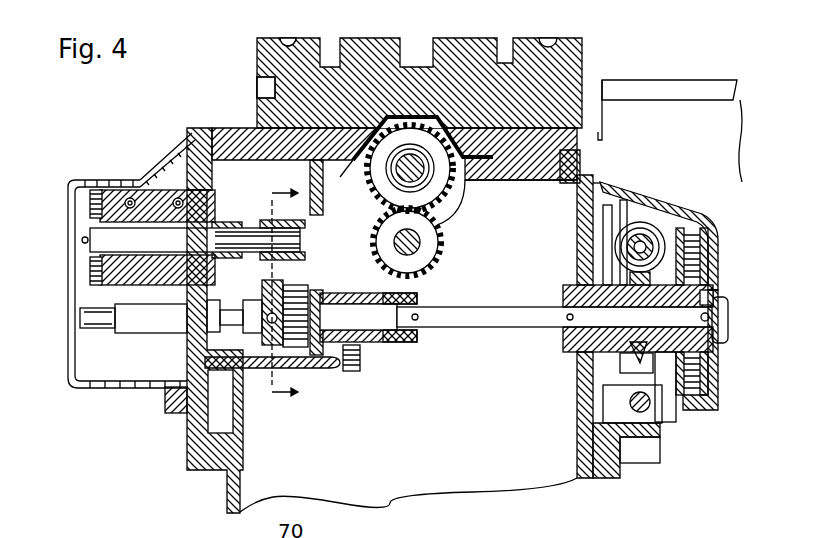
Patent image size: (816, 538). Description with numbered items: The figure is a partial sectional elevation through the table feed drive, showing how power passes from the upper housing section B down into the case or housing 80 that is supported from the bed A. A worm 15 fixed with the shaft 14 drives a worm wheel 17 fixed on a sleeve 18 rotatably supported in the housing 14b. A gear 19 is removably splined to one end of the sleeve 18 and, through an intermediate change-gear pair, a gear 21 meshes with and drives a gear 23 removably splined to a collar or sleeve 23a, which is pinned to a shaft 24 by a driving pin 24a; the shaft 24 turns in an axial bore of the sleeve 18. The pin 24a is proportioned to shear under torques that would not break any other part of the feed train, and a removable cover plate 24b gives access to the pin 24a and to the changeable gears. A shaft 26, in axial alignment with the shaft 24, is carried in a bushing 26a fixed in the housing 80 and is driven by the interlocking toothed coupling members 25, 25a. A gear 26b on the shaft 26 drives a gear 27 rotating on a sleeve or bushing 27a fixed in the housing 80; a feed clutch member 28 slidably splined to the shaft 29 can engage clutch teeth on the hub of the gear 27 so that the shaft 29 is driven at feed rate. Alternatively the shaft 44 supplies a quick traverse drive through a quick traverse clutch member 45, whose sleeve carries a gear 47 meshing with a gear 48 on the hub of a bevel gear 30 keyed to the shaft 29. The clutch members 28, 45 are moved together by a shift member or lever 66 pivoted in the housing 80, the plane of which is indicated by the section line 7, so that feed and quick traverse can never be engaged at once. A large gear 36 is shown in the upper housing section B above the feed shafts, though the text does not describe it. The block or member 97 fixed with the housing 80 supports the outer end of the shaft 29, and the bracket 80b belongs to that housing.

The upper housing section B is at (460, 41).
The bed A is at (227, 488).
The section line 7— 7 is at (277, 292).
The shaft 14 is at (632, 227).
The housing 14b is at (665, 205).
The worm 15 is at (653, 230).
The worm wheel 17 is at (643, 372).
The sleeve 18 is at (672, 367).
The gear 19 is at (687, 365).
The gear 21 is at (713, 392).
The gear 23 is at (713, 295).
The collar or sleeve 23a is at (722, 300).
The shaft 24 is at (722, 333).
The driving pin 24a is at (716, 322).
The removable cover plate 24b is at (712, 251).
The coupling member 25 is at (386, 341).
The coupling member 25a is at (405, 338).
The shaft 26 is at (363, 340).
The bushing 26a is at (368, 341).
The gear 26b is at (312, 360).
The gear 27 is at (300, 128).
The sleeve or bushing 27a is at (300, 226).
The feed clutch member 28 is at (247, 220).
The shaft 29 is at (223, 220).
The bevel gear 30 is at (340, 150).
The drive gear 36 is at (405, 133).
The shaft 44 is at (137, 322).
The quick traverse clutch member 45 is at (235, 375).
The gear 47 is at (352, 353).
The gear 48 is at (272, 62).
The shift member or lever 66 is at (260, 292).
The case or housing 80 is at (188, 448).
The bracket 80b is at (307, 367).
The block or member 97 is at (158, 276).